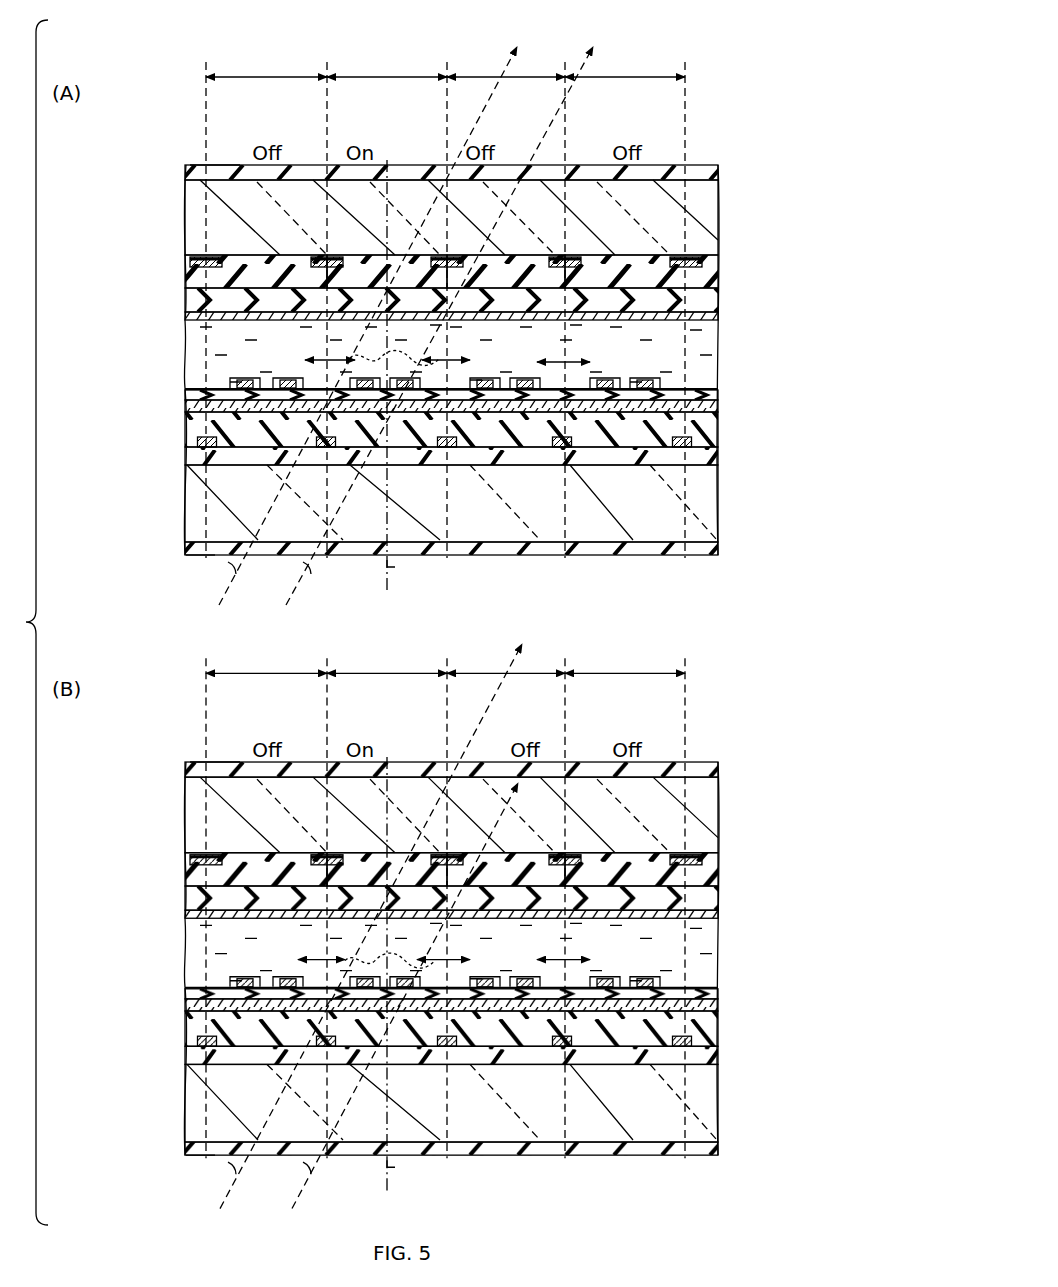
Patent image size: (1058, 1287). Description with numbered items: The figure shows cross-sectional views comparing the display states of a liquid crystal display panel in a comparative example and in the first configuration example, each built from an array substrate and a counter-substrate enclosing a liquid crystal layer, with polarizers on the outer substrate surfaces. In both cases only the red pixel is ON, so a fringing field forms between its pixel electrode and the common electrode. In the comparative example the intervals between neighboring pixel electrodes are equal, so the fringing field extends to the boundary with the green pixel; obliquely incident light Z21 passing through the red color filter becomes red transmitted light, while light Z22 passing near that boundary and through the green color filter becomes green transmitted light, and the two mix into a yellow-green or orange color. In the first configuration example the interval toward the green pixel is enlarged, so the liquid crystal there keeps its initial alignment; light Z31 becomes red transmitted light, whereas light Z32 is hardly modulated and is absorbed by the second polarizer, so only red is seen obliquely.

The light Z21 is at (383, 311).
The light Z22 is at (454, 311).
The light Z31 is at (392, 915).
The light Z32 is at (426, 992).